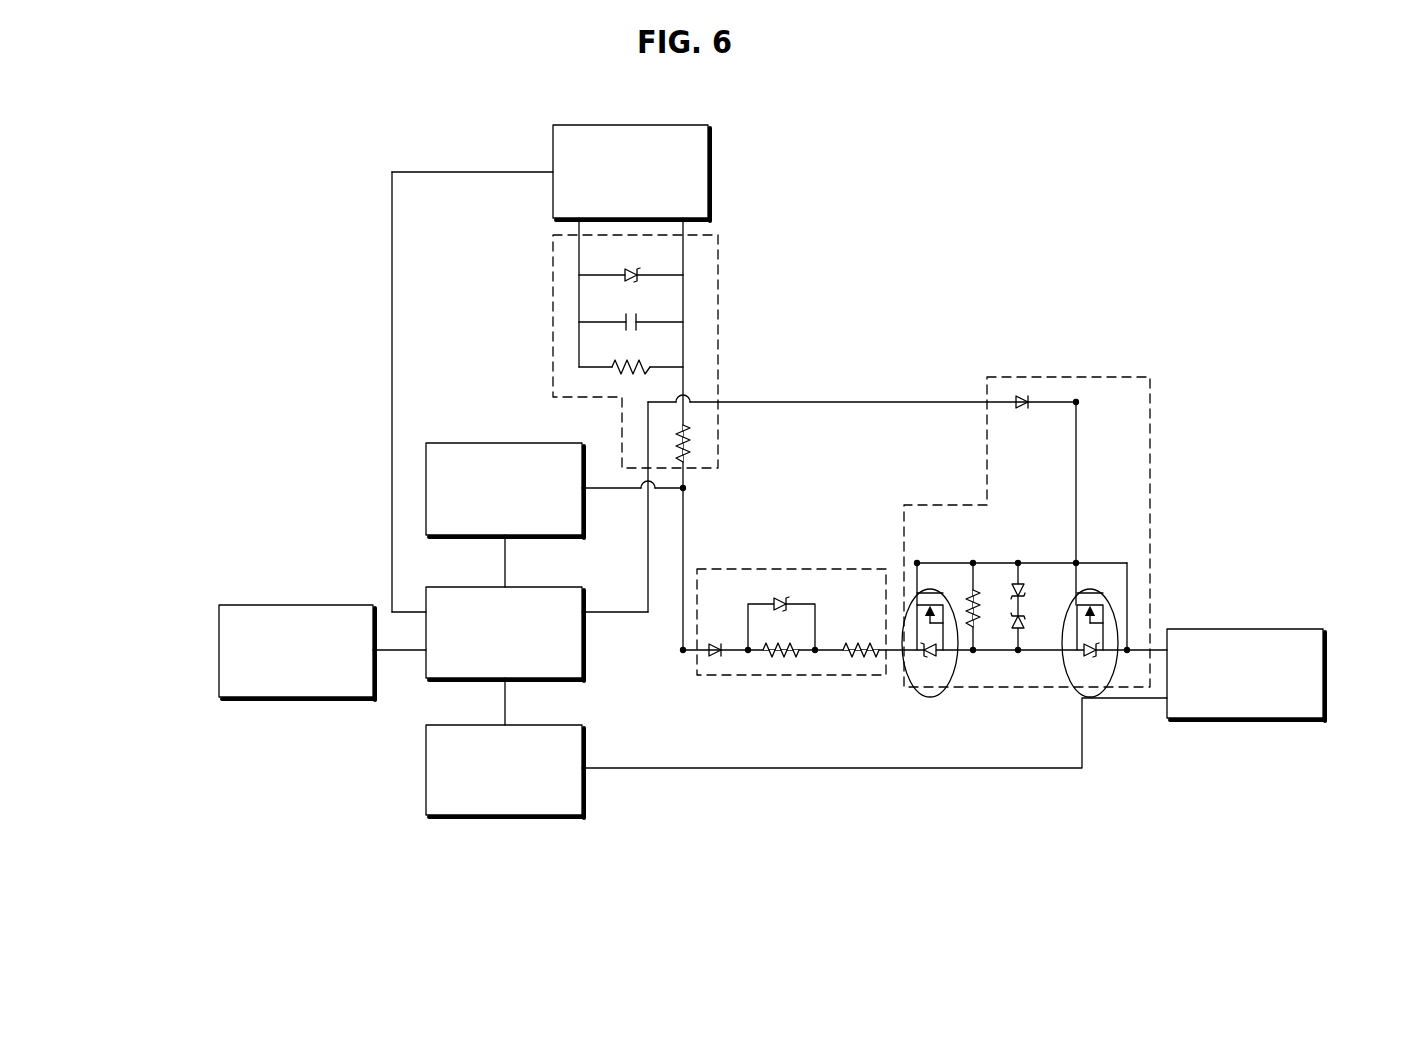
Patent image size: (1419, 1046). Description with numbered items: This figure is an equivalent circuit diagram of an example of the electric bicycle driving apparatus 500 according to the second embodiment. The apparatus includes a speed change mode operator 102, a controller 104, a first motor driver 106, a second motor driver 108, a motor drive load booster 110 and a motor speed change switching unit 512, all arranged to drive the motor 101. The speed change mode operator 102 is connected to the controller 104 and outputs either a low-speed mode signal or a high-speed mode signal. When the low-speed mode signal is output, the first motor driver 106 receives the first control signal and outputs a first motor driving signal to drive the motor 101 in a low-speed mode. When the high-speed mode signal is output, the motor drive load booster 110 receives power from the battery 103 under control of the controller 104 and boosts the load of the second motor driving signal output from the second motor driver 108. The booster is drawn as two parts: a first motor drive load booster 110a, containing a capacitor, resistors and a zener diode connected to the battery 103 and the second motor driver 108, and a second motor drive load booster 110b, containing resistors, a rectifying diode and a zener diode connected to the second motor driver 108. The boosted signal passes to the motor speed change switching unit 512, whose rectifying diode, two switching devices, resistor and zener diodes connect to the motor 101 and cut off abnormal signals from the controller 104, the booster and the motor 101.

The electric bicycle driving apparatus 500 is at (405, 119).
The motor 101 is at (1248, 722).
The speed change mode operator 102 is at (313, 700).
The battery 103 is at (712, 172).
The controller 104 is at (578, 586).
The first motor driver 106 is at (508, 818).
The second motor driver 108 is at (467, 443).
The motor drive load booster 110 is at (893, 343).
The first motor drive load booster 110a is at (720, 352).
The second motor drive load booster 110b is at (853, 567).
The motor speed change switching unit 512 is at (1152, 455).